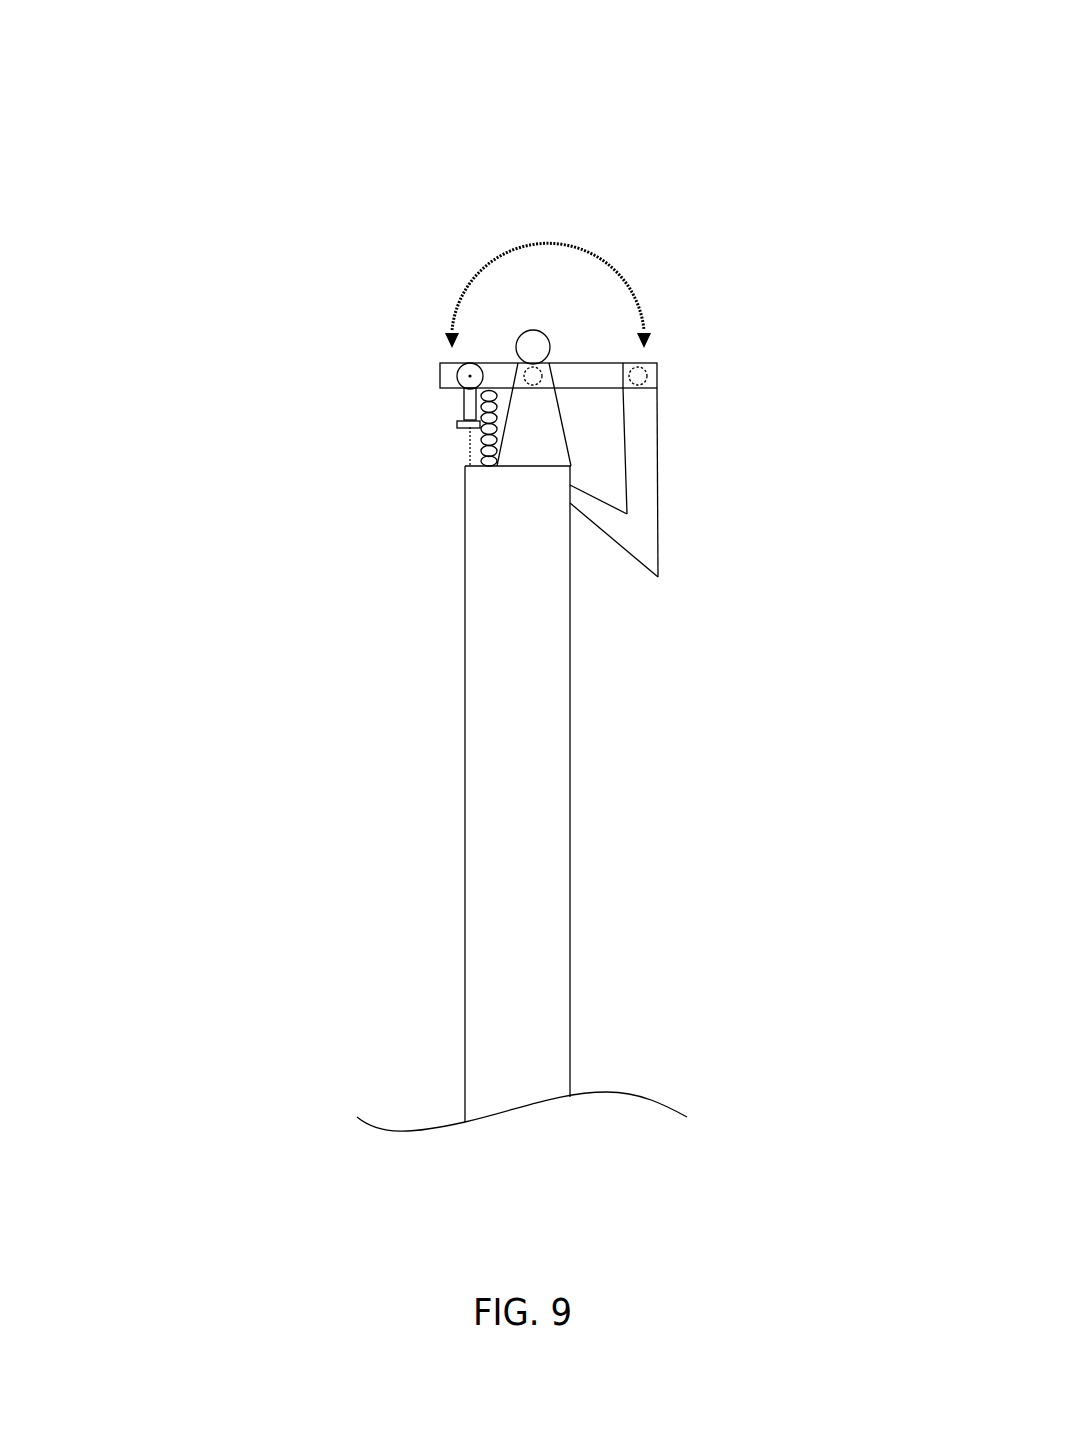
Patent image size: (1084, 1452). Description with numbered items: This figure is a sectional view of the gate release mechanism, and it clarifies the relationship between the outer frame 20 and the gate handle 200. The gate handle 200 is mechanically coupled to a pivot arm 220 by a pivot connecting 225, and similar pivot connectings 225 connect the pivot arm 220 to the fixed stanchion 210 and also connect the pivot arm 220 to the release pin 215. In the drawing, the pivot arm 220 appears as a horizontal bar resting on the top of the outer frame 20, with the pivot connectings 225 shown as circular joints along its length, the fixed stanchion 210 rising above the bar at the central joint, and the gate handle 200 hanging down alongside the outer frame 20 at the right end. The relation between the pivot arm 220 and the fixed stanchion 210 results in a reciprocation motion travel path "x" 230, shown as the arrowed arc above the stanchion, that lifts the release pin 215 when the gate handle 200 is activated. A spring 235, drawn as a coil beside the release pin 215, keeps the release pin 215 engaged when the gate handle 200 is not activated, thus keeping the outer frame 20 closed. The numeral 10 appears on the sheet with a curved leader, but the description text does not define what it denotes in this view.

The tool assembly 10 is at (154, 180).
The outer frame 20 is at (571, 810).
The gate handle 200 is at (645, 465).
The fixed stanchion 210 is at (535, 343).
The release pin 215 is at (470, 443).
The pivot arm 220 is at (590, 370).
The pivot connecting 225 is at (518, 363).
The reciprocation motion travel path "x" 230 is at (503, 255).
The spring 235 is at (470, 460).